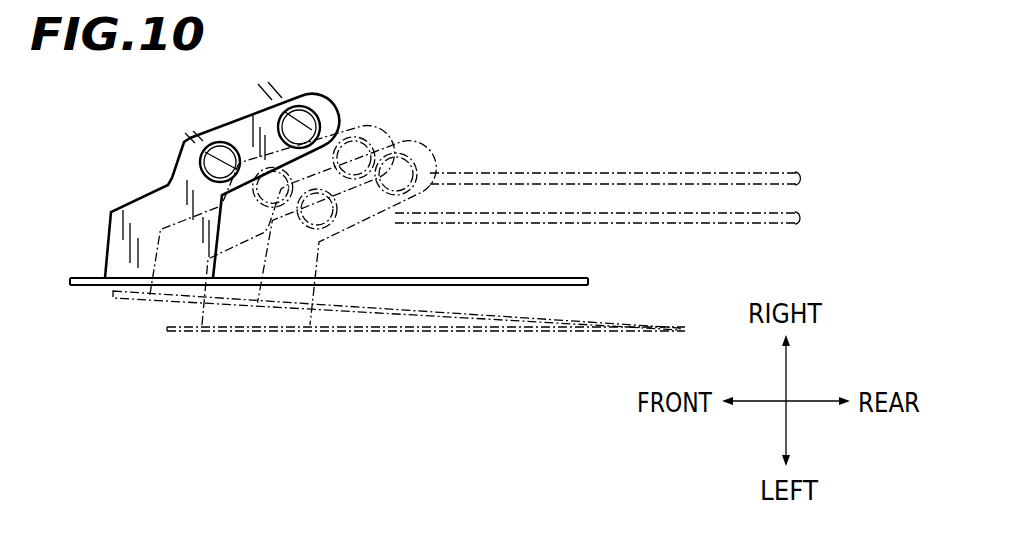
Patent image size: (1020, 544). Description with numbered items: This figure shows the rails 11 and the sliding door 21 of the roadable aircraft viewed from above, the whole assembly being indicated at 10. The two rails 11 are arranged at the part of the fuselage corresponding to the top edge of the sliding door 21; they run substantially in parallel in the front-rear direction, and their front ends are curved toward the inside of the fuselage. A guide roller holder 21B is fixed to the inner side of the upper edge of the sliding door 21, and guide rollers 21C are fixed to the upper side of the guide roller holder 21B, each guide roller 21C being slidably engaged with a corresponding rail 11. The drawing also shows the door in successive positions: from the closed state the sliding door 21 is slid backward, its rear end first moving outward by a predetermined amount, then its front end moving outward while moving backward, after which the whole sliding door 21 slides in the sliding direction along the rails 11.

The vehicle body frame structure 10 is at (528, 129).
The rail 11 is at (660, 213).
The sliding door 21 is at (346, 227).
The guide roller holder 21B is at (164, 187).
The guide roller 21C is at (227, 145).